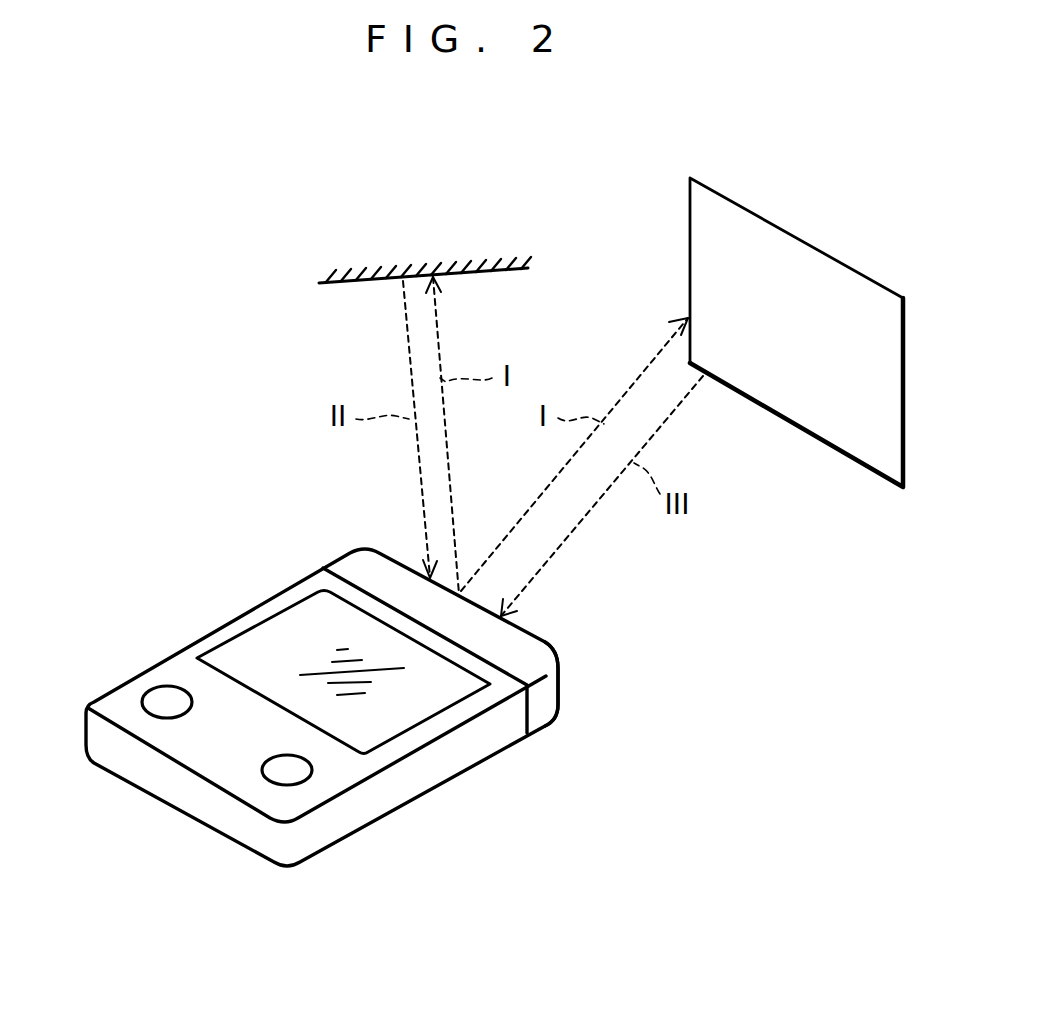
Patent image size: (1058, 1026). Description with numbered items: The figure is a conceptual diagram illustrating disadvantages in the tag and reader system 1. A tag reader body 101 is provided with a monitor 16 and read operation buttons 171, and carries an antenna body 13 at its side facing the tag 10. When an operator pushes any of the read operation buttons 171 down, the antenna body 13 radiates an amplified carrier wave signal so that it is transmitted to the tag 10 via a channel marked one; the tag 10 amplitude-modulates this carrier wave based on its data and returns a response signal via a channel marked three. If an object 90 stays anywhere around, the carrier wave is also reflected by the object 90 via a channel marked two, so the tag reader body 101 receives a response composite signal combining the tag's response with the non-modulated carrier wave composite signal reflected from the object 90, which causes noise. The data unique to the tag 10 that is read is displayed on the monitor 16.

The tag and reader system 1 is at (287, 218).
The tag 10 is at (838, 246).
The object 90 is at (476, 230).
The tag reader body 101 is at (457, 773).
The antenna body 13 is at (550, 703).
The monitor 16 is at (272, 640).
The read operation buttons 171 is at (157, 695).